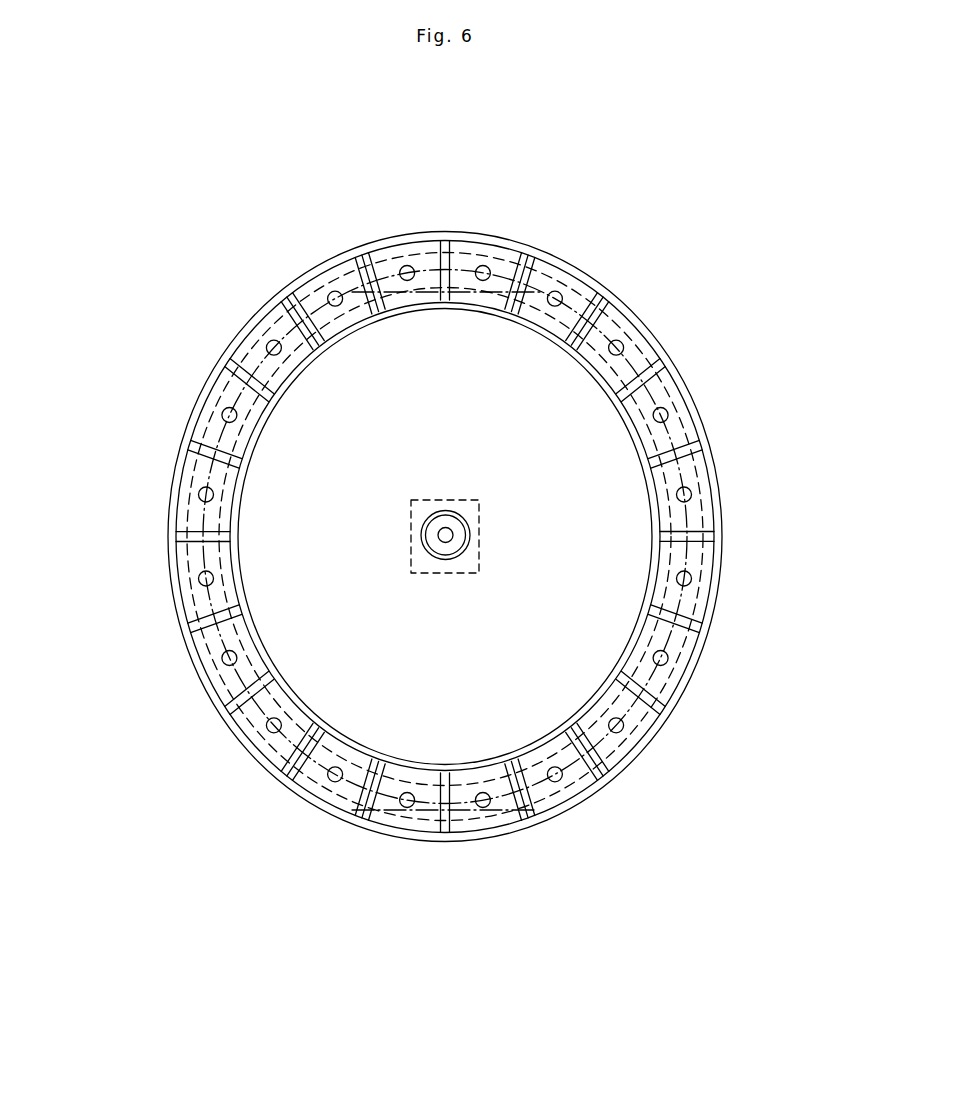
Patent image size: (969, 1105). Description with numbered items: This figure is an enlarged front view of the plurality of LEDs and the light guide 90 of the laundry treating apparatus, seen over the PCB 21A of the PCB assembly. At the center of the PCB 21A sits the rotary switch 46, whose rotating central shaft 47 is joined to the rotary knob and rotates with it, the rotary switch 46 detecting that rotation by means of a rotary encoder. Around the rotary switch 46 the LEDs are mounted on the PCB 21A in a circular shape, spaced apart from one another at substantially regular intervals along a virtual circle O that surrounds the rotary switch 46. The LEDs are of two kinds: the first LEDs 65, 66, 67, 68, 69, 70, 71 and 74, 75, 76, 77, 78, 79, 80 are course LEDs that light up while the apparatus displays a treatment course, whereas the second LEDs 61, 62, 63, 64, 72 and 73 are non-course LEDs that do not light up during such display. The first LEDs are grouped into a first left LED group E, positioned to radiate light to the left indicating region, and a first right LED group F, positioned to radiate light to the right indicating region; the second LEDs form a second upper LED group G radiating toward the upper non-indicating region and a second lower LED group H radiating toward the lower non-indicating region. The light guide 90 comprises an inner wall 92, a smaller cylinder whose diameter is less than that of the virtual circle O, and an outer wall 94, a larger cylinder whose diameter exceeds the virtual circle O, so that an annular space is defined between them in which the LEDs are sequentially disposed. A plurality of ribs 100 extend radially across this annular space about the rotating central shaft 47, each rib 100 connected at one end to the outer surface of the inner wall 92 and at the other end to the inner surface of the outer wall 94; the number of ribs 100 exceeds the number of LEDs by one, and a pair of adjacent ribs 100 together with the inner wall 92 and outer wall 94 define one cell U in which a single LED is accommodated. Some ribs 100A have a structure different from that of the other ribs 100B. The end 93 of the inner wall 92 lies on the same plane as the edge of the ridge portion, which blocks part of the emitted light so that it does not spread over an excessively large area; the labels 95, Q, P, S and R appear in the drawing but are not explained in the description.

The PCB 21A is at (707, 347).
The rotary switch 46 is at (452, 566).
The rotating central shaft 47 is at (452, 532).
The second LED 61 is at (558, 783).
The second LED 62 is at (483, 808).
The second LED 63 is at (405, 808).
The second LED 64 is at (331, 782).
The first LED 65 is at (267, 731).
The first LED 66 is at (222, 661).
The first LED 67 is at (199, 580).
The first LED 68 is at (199, 493).
The first LED 69 is at (224, 409).
The first LED 70 is at (273, 340).
The first LED 71 is at (333, 291).
The second LED 72 is at (407, 265).
The second LED 73 is at (485, 265).
The first LED 74 is at (560, 291).
The first LED 75 is at (623, 344).
The first LED 76 is at (668, 415).
The first LED 77 is at (692, 493).
The first LED 78 is at (692, 581).
The first LED 79 is at (668, 665).
The first LED 80 is at (622, 733).
The light guide 90 is at (633, 851).
The inner wall 92 is at (603, 306).
The end of the inner wall 93 is at (578, 317).
The outer wall 94 is at (688, 372).
The outer circumferential surface 95 is at (687, 383).
The rib 100 is at (452, 516).
The ribs having a different structure 100A is at (445, 240).
The other ribs 100B is at (193, 446).
The second upper LED group G is at (387, 255).
The virtual circle O is at (550, 253).
The first right LED group F is at (199, 438).
The first left LED group E is at (710, 519).
The second lower LED group H is at (510, 815).
The cell U is at (395, 248).
The chord Q is at (352, 297).
The chord P is at (352, 814).
The chord S is at (200, 427).
The chord R is at (697, 426).